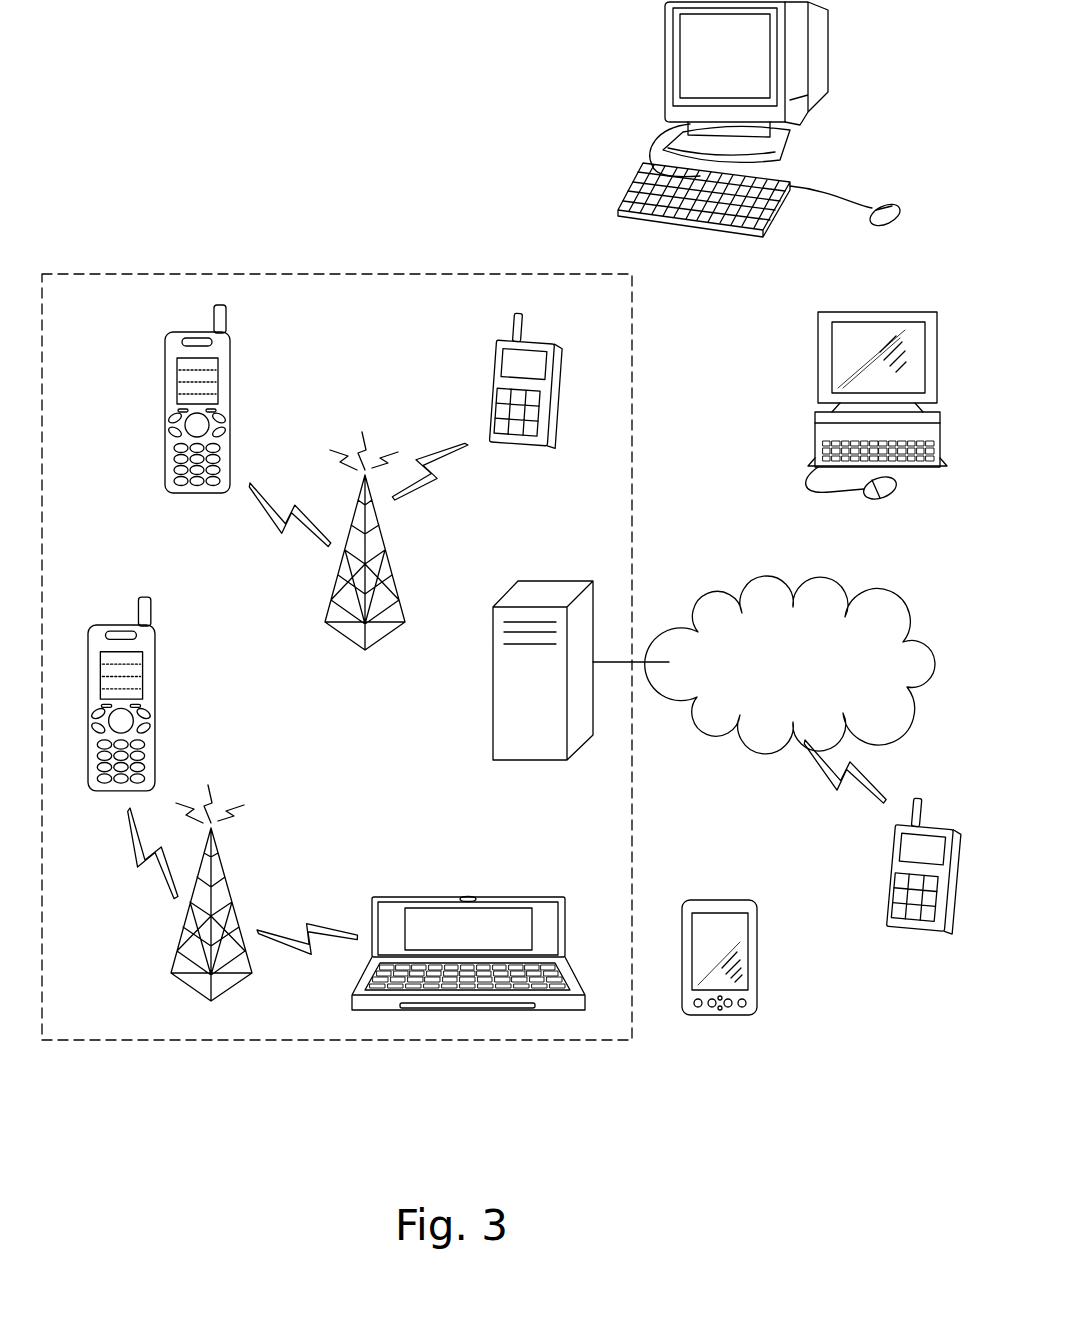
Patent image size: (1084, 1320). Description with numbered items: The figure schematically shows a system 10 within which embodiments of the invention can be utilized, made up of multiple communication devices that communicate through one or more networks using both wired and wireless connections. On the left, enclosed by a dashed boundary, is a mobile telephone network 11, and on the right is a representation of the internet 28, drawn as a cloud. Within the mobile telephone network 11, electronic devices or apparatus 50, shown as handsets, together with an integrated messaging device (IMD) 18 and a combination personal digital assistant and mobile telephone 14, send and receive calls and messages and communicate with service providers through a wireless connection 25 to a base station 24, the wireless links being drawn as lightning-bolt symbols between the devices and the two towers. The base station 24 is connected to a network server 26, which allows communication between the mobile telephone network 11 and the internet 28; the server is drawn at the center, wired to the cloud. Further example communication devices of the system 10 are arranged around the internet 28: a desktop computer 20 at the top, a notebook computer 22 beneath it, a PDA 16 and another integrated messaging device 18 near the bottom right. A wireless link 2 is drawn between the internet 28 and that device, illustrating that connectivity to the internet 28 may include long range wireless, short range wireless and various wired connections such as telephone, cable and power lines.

The wireless link 2 is at (860, 764).
The system 10 is at (923, 567).
The mobile telephone network 11 is at (90, 316).
The combination of a personal digital assistant and a mobile telephone 14 is at (453, 897).
The PDA 16 is at (760, 953).
The integrated messaging device 18 is at (492, 395).
The desktop computer 20 is at (828, 50).
The notebook computer 22 is at (876, 312).
The base station 24 is at (386, 548).
The wireless connection 25 is at (148, 872).
The network server 26 is at (493, 677).
The internet 28 is at (710, 612).
The electronic device or apparatus 50 is at (232, 411).